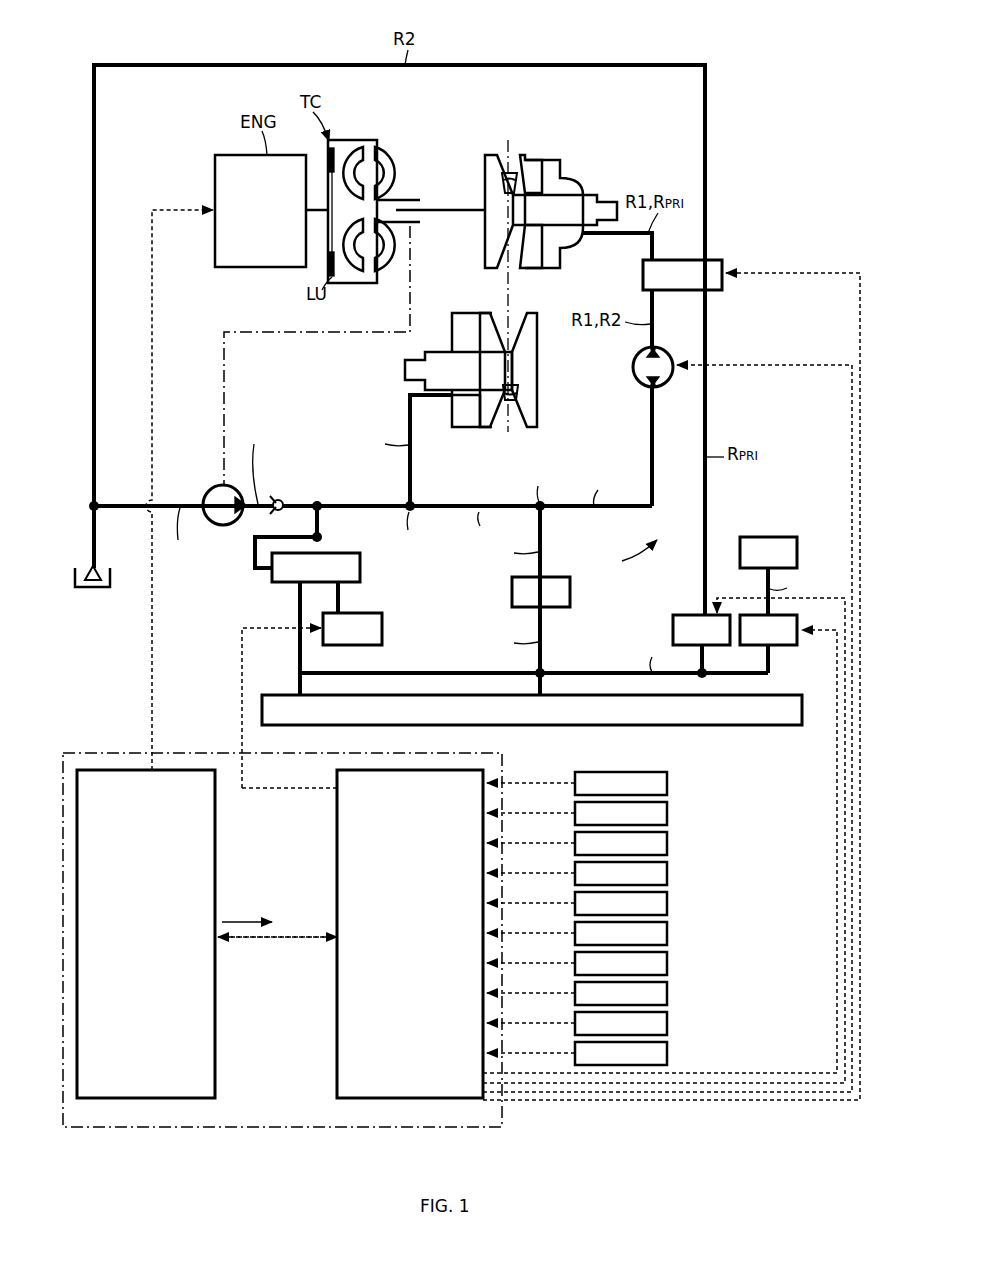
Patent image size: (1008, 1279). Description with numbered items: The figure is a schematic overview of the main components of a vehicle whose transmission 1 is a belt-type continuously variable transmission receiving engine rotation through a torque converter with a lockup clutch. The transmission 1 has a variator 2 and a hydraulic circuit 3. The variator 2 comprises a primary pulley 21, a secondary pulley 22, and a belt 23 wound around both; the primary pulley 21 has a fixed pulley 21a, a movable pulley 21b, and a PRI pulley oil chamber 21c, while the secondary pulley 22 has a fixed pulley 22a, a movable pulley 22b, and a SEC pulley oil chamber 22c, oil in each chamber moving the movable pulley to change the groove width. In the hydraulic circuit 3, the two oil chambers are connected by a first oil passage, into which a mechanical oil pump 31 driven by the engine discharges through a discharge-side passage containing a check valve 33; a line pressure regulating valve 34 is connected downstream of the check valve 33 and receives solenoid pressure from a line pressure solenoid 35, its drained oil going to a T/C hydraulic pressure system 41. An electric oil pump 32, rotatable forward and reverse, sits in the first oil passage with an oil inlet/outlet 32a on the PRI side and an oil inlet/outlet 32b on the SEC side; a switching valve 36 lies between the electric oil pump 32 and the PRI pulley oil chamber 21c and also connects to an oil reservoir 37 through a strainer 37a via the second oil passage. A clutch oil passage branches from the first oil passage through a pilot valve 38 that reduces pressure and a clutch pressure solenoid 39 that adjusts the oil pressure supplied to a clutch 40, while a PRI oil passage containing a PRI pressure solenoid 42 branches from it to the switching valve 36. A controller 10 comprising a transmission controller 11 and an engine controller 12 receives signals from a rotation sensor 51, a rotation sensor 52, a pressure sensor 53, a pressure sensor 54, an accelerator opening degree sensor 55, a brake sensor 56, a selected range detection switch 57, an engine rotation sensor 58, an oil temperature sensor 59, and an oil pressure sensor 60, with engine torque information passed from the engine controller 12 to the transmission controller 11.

The transmission 1 is at (608, 38).
The variator 2 is at (536, 130).
The hydraulic circuit 3 is at (222, 573).
The controller 10 is at (107, 753).
The transmission controller 11 is at (423, 1098).
The engine controller 12 is at (148, 1098).
The primary pulley 21 is at (562, 152).
The fixed pulley 21a is at (486, 190).
The movable pulley 21b is at (526, 156).
The PRI pulley oil chamber 21c is at (573, 178).
The secondary pulley 22 is at (460, 312).
The fixed pulley 22a is at (538, 402).
The movable pulley 22b is at (490, 410).
The SEC pulley oil chamber 22c is at (462, 420).
The belt 23 is at (512, 405).
The mechanical oil pump 31 is at (212, 494).
The electric oil pump 32 is at (632, 366).
The oil inlet/outlet 32a is at (657, 347).
The oil inlet/outlet 32b is at (657, 388).
The check valve 33 is at (277, 498).
The line pressure regulating valve 34 is at (286, 583).
The line pressure solenoid 35 is at (366, 613).
The switching valve 36 is at (710, 260).
The oil reservoir 37 is at (90, 588).
The strainer 37a is at (96, 567).
The pilot valve 38 is at (545, 576).
The clutch pressure solenoid 39 is at (782, 647).
The clutch 40 is at (768, 537).
The T/C hydraulic pressure system 41 is at (752, 726).
The PRI pressure solenoid 42 is at (683, 615).
The rotation sensor 51 is at (667, 786).
The rotation sensor 52 is at (667, 816).
The pressure sensor 53 is at (667, 846).
The pressure sensor 54 is at (667, 876).
The accelerator opening degree sensor 55 is at (667, 906).
The brake sensor 56 is at (667, 936).
The selected range detection switch 57 is at (667, 966).
The engine rotation sensor 58 is at (667, 996).
The oil temperature sensor 59 is at (667, 1026).
The oil pressure sensor 60 is at (667, 1056).